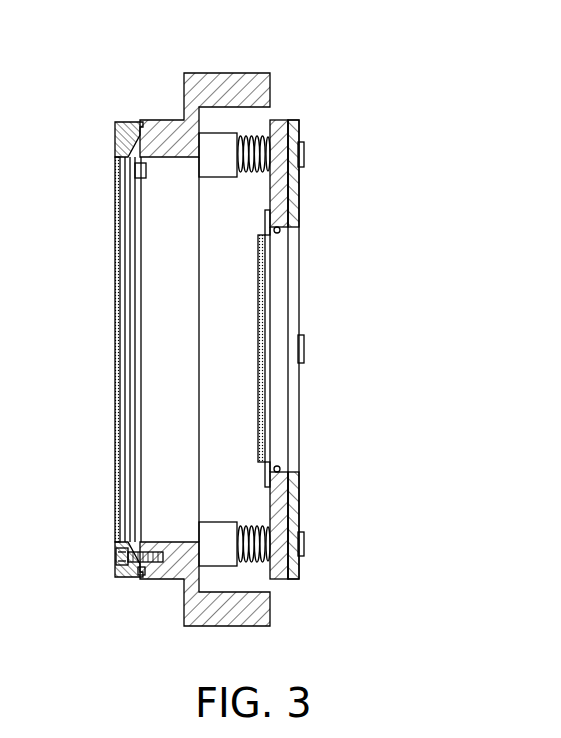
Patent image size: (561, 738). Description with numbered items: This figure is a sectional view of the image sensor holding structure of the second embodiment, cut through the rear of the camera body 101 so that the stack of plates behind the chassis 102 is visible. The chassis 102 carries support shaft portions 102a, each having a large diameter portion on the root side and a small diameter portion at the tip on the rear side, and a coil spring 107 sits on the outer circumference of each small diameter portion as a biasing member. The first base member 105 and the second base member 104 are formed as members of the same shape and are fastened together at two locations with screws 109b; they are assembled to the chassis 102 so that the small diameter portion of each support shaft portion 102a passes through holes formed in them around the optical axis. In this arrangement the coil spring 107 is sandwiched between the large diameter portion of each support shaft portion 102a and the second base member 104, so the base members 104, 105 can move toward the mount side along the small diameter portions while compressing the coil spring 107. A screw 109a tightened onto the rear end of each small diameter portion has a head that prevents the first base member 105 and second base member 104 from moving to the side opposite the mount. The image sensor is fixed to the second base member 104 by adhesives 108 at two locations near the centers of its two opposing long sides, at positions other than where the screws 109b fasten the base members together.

The lens cover assembly 101 is at (128, 123).
The chassis 102 is at (212, 88).
The support shaft portion 102a is at (215, 140).
The second base member 104 is at (284, 178).
The first base member 105 is at (293, 122).
The coil spring 107 is at (255, 138).
The adhesive 108 is at (268, 235).
The screw 109a is at (305, 153).
The screw 109b is at (305, 349).